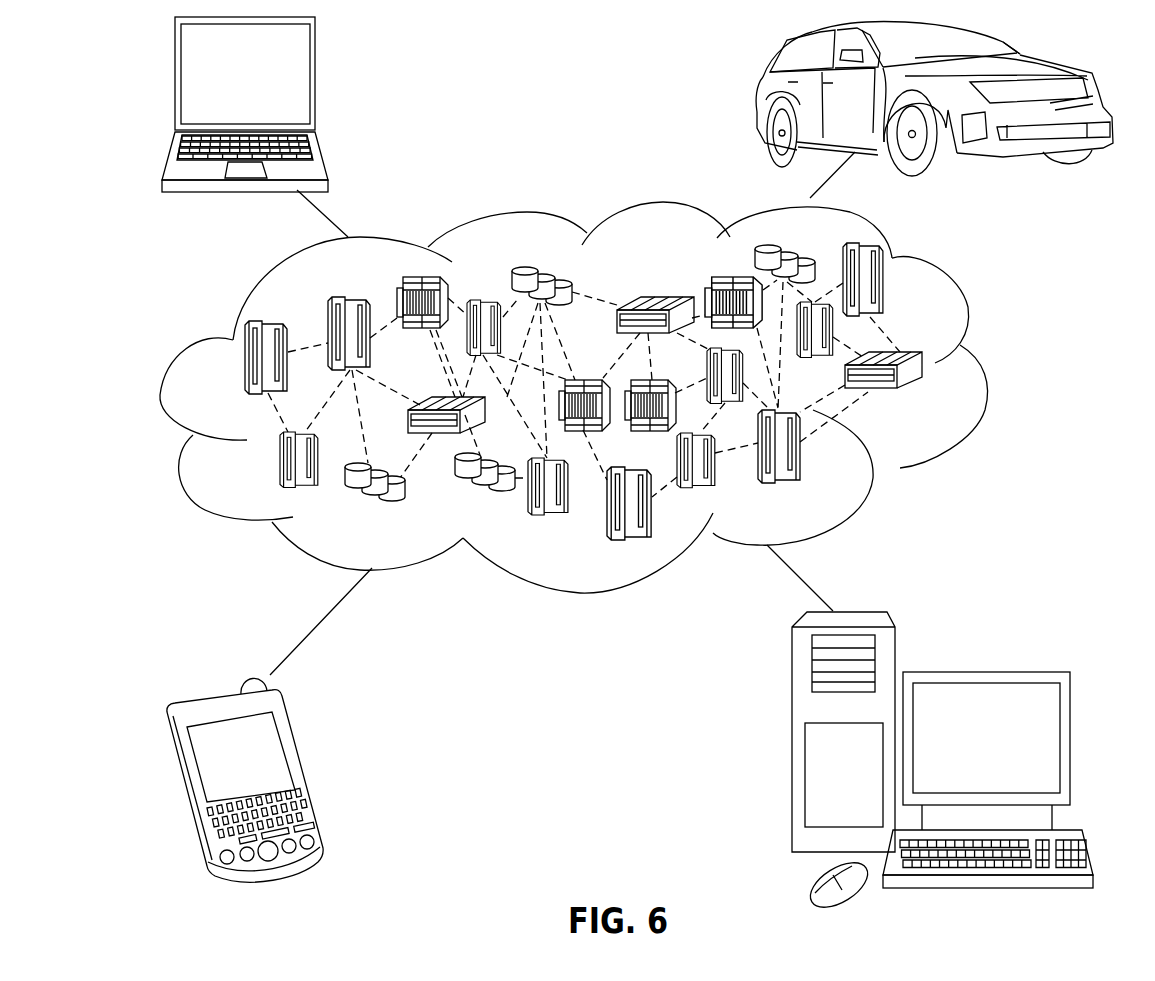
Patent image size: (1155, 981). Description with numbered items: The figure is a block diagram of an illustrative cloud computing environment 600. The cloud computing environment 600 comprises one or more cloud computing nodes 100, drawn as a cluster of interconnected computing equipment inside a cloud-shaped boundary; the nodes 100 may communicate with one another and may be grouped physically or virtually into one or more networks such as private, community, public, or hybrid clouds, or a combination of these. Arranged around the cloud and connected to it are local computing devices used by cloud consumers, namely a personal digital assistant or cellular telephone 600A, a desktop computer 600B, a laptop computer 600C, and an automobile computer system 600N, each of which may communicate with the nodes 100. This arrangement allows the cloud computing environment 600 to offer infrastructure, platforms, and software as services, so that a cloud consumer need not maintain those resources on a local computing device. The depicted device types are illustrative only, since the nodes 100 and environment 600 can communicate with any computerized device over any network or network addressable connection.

The cloud computing environment 600 is at (985, 371).
The cloud computing nodes 100 is at (927, 400).
The personal digital assistant (PDA) or cellular telephone 600A is at (307, 768).
The desktop computer 600B is at (983, 672).
The laptop computer 600C is at (315, 80).
The automobile computer system 600N is at (760, 98).